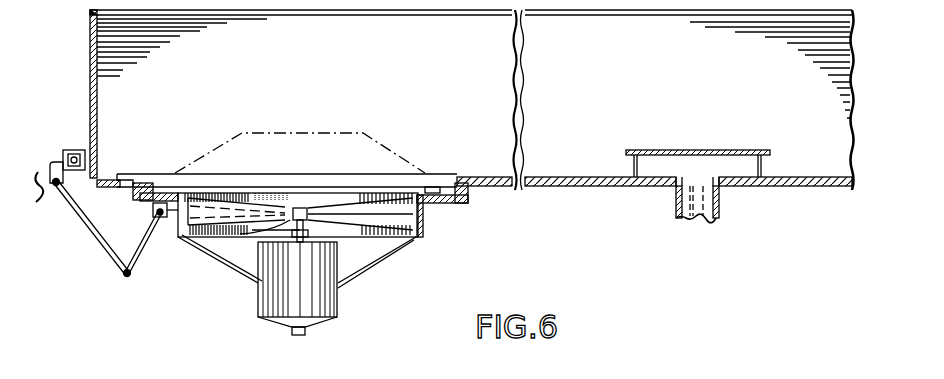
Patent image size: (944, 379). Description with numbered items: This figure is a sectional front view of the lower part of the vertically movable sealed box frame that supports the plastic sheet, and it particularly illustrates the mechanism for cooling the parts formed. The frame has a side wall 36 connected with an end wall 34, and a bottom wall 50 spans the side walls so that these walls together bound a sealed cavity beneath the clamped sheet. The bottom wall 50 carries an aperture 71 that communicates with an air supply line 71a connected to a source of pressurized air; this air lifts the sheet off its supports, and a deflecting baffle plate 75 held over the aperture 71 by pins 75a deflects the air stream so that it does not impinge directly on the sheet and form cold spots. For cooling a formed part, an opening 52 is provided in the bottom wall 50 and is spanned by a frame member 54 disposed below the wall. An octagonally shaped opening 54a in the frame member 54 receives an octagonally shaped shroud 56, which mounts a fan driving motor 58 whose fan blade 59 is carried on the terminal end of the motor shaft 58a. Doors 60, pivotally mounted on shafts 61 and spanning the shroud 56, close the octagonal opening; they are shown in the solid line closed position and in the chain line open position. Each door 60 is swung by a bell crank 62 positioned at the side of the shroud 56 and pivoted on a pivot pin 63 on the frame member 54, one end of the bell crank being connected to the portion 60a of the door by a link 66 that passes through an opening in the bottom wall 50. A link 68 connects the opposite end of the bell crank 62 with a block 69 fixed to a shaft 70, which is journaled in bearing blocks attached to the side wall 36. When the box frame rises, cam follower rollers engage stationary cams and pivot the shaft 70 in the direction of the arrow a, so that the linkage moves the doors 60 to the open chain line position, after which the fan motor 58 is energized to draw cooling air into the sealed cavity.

The end wall 34 is at (467, 78).
The side wall 36 is at (90, 52).
The bottom wall 50 is at (530, 184).
The opening 52 is at (452, 174).
The frame member 54 is at (470, 203).
The octagonally shaped opening 54a is at (428, 205).
The shroud 56 is at (422, 235).
The fan driving motor 58 is at (337, 300).
The motor shaft 58a is at (285, 232).
The fan blade 59 is at (355, 217).
The door 60 is at (233, 191).
The door portion 60a is at (285, 191).
The shaft 61 is at (430, 187).
The bell crank 62 is at (147, 236).
The pivot pin 63 is at (153, 210).
The link 66 is at (290, 206).
The link 68 is at (92, 229).
The block 69 is at (57, 166).
The shaft 70 is at (74, 150).
The arrow a is at (36, 199).
The aperture 71 is at (718, 186).
The air supply line 71a is at (708, 218).
The deflecting baffle plate 75 is at (680, 150).
The pin 75a is at (762, 163).